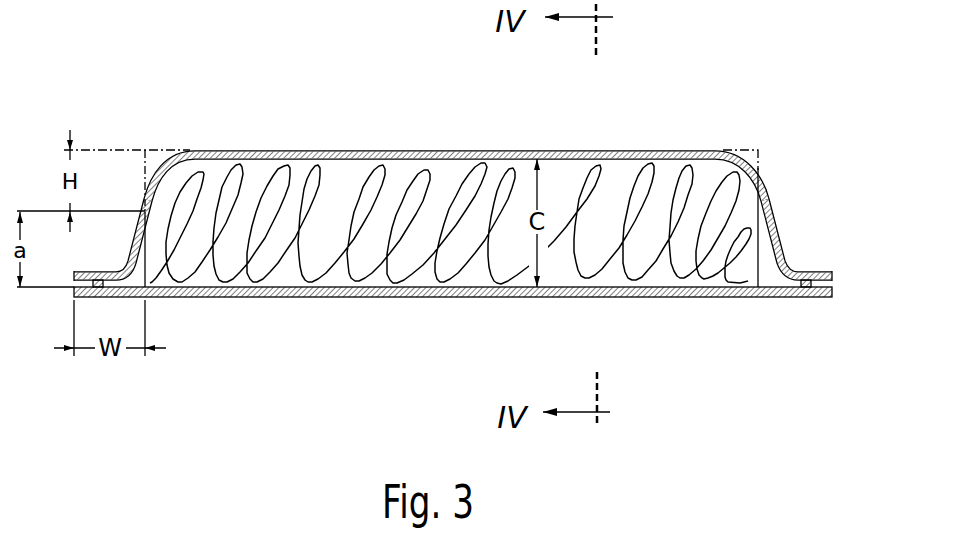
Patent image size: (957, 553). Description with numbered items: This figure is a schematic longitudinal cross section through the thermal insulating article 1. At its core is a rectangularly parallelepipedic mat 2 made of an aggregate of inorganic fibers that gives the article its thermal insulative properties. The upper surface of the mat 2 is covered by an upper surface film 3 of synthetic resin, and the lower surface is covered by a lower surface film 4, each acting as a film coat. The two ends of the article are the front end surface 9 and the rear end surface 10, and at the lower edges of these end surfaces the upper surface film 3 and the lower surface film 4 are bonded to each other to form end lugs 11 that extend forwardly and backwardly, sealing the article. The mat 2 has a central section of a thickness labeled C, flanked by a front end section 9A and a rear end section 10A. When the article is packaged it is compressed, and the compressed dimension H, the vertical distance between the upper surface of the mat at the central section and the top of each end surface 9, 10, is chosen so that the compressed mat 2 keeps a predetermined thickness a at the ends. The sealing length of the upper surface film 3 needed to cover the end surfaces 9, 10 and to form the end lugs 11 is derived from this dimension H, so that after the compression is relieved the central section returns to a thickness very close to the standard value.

The thermal insulating article 1 is at (357, 58).
The mat 2 is at (410, 280).
The upper surface film 3 is at (365, 150).
The lower surface film 4 is at (260, 297).
The front end surface 9 is at (143, 178).
The front end section 9A is at (163, 163).
The rear end surface 10 is at (765, 171).
The rear end section 10A is at (740, 158).
The end lugs 11 is at (105, 272).